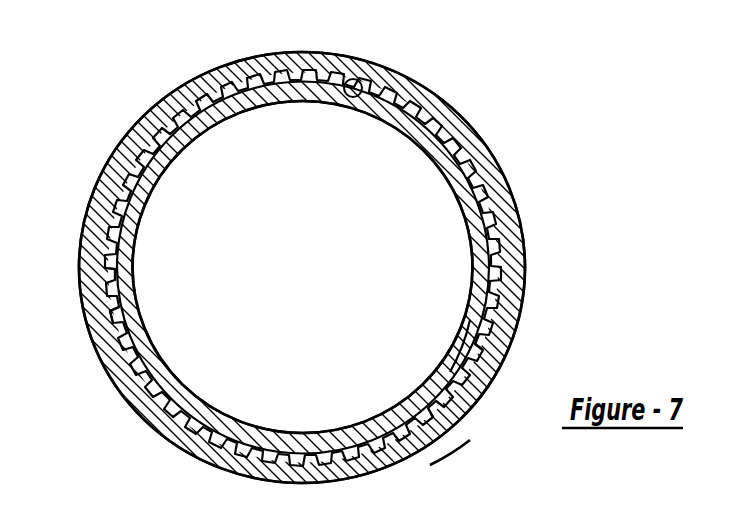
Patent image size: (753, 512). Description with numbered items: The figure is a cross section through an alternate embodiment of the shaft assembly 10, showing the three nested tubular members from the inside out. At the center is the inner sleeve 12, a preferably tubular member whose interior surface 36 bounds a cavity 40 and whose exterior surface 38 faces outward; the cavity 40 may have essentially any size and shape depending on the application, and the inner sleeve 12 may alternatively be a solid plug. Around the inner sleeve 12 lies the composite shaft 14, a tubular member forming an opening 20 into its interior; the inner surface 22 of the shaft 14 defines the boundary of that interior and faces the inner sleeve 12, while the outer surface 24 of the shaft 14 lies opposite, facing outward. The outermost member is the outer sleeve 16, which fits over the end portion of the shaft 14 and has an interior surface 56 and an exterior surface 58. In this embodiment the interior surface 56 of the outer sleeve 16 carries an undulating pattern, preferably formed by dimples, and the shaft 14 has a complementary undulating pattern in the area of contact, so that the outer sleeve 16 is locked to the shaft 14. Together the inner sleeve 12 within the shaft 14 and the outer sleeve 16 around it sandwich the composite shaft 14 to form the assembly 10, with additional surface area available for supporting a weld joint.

The assembly 10 is at (96, 73).
The inner sleeve 12 is at (483, 243).
The composite shaft 14 is at (490, 168).
The outer sleeve 16 is at (453, 100).
The opening 20 is at (365, 88).
The inner surface 22 is at (111, 273).
The outer surface 24 is at (98, 323).
The interior surface 36 is at (471, 337).
The exterior surface 38 is at (456, 338).
The cavity 40 is at (383, 246).
The interior surface 56 is at (419, 404).
The exterior surface 58 is at (450, 433).